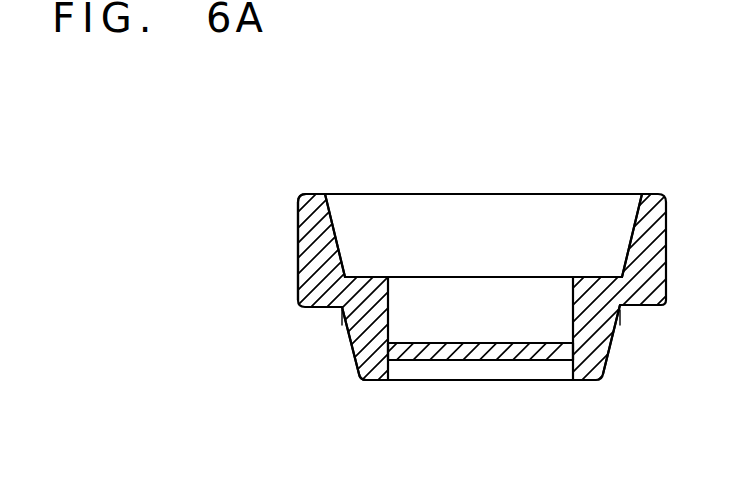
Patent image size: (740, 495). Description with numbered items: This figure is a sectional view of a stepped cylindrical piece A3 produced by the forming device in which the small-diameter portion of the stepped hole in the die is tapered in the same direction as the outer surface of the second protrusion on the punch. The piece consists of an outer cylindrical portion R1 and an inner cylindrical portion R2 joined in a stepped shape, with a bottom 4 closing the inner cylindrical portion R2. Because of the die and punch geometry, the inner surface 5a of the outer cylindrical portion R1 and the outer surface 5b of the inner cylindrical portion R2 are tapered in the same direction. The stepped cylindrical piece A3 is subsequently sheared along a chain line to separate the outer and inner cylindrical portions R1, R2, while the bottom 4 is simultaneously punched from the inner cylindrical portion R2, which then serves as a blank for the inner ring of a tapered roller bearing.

The stepped cylindrical piece A3 is at (580, 193).
The tapered inner surface 5a is at (333, 223).
The tapered outer surface 5b is at (347, 342).
The outer cylindrical portion R1 is at (300, 262).
The inner cylindrical portion R2 is at (356, 386).
The bottom 4 is at (465, 352).